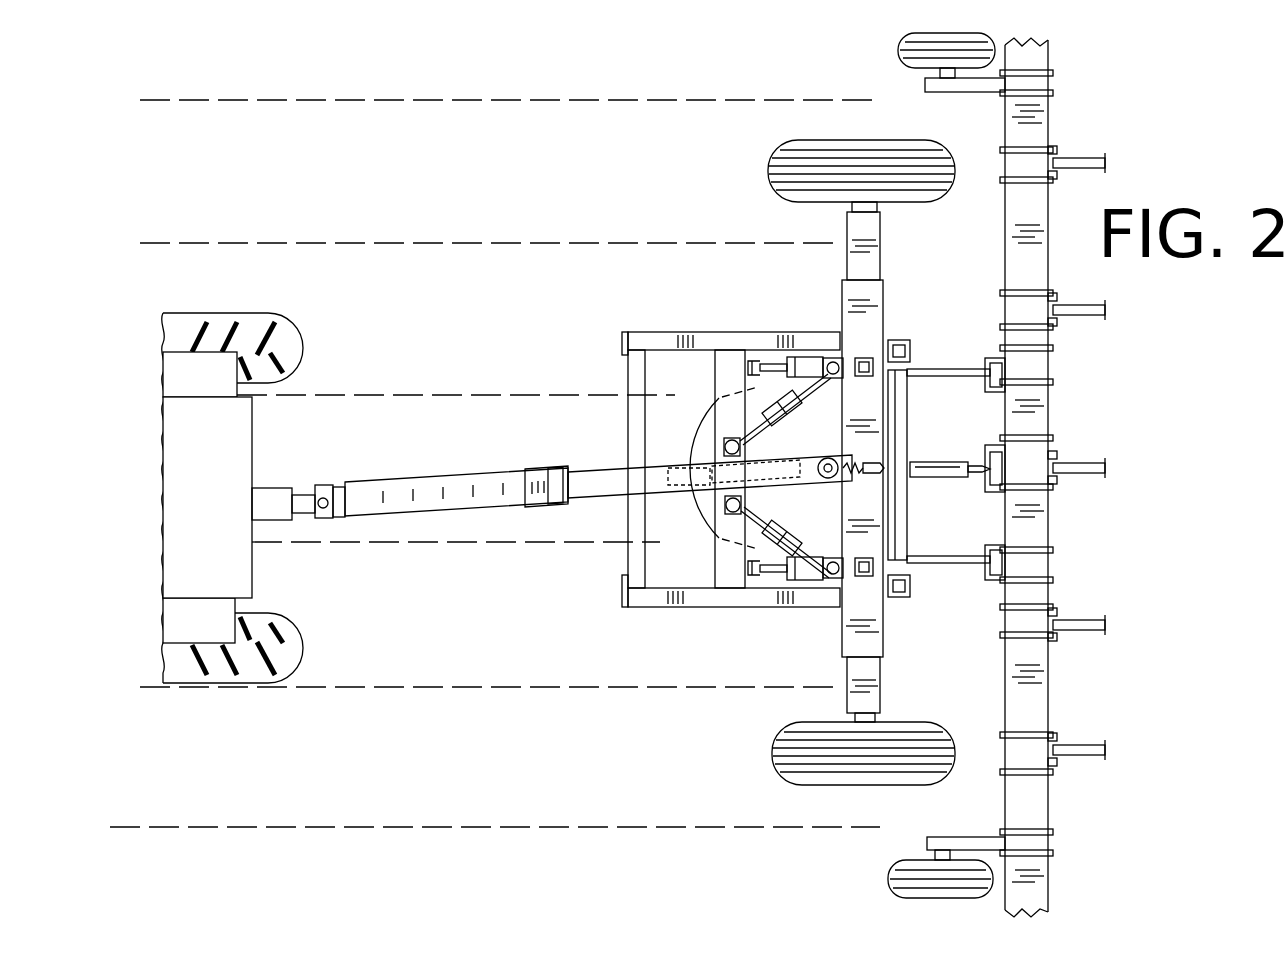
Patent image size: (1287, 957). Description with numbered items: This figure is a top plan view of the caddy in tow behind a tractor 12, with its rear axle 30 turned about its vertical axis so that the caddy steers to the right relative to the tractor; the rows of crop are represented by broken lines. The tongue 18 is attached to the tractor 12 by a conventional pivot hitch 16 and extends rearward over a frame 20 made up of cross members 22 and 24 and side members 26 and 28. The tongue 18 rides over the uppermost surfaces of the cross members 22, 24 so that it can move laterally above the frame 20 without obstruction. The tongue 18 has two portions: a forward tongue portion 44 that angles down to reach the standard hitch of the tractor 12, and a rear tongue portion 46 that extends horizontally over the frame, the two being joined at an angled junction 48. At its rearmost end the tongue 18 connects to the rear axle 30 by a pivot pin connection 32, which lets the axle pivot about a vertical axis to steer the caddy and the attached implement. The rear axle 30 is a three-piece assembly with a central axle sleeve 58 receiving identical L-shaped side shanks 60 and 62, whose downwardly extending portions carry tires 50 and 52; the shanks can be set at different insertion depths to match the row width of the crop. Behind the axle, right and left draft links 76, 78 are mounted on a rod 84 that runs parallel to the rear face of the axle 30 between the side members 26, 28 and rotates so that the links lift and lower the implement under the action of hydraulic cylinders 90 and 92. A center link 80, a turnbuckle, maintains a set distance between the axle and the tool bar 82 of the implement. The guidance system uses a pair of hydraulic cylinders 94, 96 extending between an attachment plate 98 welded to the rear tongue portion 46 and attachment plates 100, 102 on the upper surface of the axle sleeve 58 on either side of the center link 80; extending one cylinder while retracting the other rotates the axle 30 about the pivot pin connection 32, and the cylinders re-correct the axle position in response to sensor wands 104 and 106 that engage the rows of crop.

The tractor 12 is at (255, 571).
The pivot hitch 16 is at (323, 490).
The tongue 18 is at (500, 506).
The frame 20 is at (685, 466).
The cross member 22 is at (628, 424).
The cross member 24 is at (718, 565).
The side member 26 is at (676, 332).
The side member 28 is at (733, 598).
The rear axle 30 is at (853, 462).
The pivot pin connection 32 is at (828, 457).
The forward tongue portion 44 is at (440, 486).
The rear tongue portion 46 is at (606, 481).
The angled junction 48 is at (550, 472).
The tire 50 is at (770, 162).
The tire 52 is at (776, 760).
The axle sleeve 58 is at (868, 291).
The side shank 60 is at (862, 232).
The side shank 62 is at (862, 668).
The right draft link 76 is at (985, 362).
The left draft link 78 is at (955, 564).
The center link 80 is at (940, 462).
The tool bar 82 is at (1038, 702).
The rod 84 is at (905, 418).
The hydraulic cylinder 90 is at (806, 357).
The hydraulic cylinder 92 is at (800, 585).
The hydraulic cylinder 94 is at (795, 403).
The hydraulic cylinder 96 is at (795, 543).
The attachment plate 98 is at (695, 489).
The attachment plate 100 is at (858, 358).
The attachment plate 102 is at (890, 525).
The sensor wand 104 is at (682, 436).
The sensor wand 106 is at (706, 535).